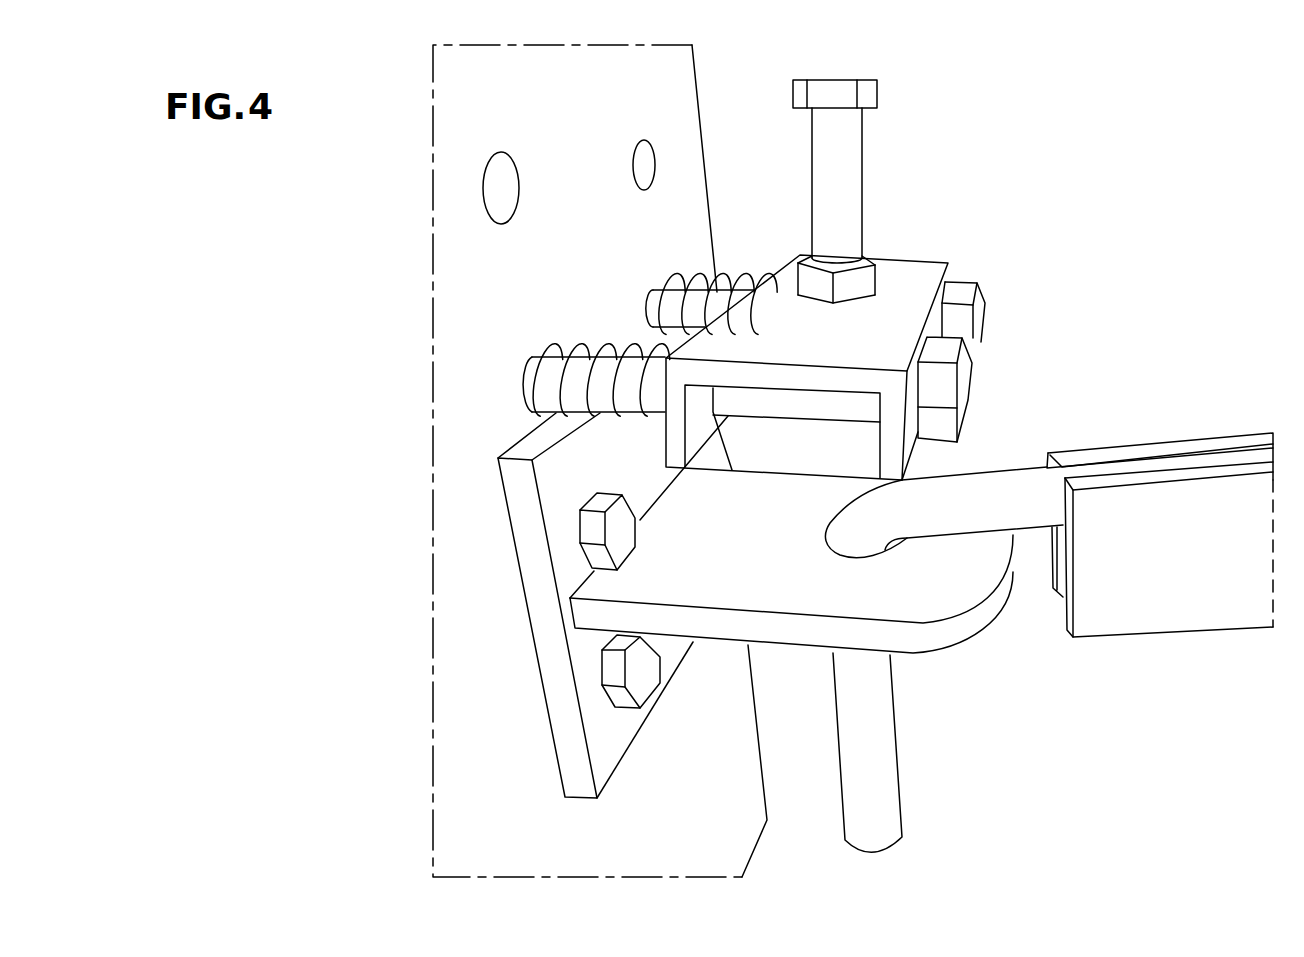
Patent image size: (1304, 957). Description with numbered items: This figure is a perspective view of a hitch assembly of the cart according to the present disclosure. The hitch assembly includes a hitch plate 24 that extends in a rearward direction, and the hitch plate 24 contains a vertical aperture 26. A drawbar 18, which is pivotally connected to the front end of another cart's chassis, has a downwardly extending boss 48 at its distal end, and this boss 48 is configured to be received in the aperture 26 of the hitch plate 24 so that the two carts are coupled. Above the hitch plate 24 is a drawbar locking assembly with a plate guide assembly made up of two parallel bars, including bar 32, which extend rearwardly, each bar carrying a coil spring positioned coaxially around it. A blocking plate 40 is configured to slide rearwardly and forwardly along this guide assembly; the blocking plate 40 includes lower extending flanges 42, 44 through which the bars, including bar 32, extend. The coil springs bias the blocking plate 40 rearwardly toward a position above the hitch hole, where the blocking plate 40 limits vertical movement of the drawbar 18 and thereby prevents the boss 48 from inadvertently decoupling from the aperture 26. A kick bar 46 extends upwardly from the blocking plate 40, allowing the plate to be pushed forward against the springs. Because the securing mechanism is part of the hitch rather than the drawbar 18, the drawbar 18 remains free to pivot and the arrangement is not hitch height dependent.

The drawbar 18 is at (1187, 582).
The hitch plate 24 is at (771, 578).
The vertical aperture 26 is at (902, 542).
The bar 32 is at (655, 310).
The blocking plate 40 is at (898, 345).
The lower extending flange 42 is at (950, 272).
The lower extending flange 44 is at (705, 427).
The kick bar 46 is at (862, 157).
The downwardly extending boss 48 is at (885, 777).